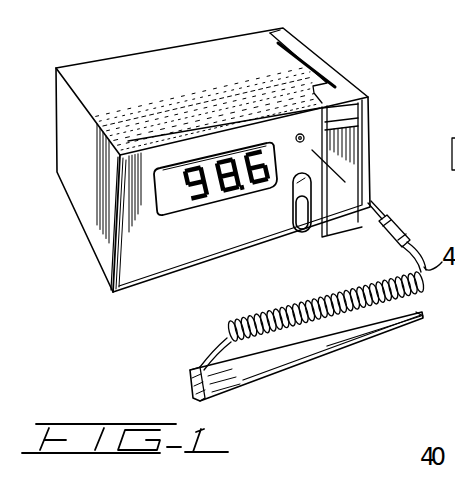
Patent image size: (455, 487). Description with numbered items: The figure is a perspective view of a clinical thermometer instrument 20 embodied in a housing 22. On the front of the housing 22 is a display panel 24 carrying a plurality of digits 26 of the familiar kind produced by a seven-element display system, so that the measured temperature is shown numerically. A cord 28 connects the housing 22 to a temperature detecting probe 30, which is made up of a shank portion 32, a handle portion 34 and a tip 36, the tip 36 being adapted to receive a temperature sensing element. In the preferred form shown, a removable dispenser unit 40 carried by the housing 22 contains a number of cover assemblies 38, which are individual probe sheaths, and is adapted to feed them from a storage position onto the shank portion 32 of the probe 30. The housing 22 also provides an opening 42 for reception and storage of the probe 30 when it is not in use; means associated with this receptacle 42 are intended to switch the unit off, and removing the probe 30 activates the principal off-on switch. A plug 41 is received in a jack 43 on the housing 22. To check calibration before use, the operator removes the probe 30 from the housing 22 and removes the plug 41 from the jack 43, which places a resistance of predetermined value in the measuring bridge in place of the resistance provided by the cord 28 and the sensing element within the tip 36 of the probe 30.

The thermometer instrument 20 is at (342, 75).
The housing 22 is at (184, 63).
The display panel 24 is at (163, 209).
The digits 26 is at (196, 196).
The cord 28 is at (322, 298).
The temperature detecting probe 30 is at (338, 356).
The shank portion 32 is at (354, 343).
The handle portion 34 is at (246, 380).
The tip 36 is at (421, 318).
The cover assemblies 38 is at (338, 99).
The removable dispenser unit 40 is at (349, 144).
The plug 41 is at (400, 228).
The opening 42 is at (296, 209).
The jack 43 is at (301, 133).